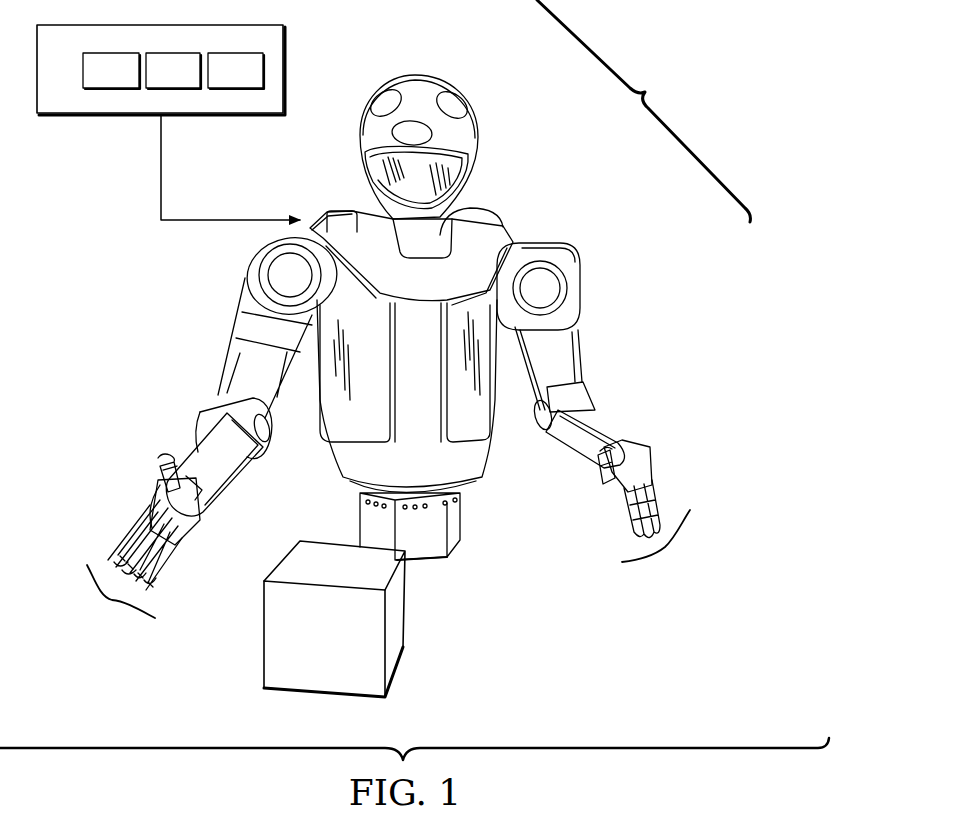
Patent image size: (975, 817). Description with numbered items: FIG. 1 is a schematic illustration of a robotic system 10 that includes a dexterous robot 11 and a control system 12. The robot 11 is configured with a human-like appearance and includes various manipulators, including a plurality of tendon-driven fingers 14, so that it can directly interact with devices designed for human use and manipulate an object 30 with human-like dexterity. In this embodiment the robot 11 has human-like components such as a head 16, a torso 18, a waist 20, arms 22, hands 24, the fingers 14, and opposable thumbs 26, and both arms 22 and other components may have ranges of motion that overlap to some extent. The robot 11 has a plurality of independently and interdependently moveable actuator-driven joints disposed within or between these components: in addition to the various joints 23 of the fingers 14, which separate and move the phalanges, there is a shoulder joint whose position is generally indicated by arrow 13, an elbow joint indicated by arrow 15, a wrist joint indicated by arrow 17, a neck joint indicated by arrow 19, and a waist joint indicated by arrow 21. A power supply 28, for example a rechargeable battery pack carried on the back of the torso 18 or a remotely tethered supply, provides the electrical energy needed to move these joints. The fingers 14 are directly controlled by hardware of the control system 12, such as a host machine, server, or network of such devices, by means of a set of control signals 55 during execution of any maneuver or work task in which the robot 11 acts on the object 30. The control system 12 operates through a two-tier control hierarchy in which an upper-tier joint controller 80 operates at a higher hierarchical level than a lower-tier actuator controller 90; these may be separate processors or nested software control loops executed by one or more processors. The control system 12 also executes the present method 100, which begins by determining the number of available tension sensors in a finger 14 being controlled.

The robotic system 10 is at (643, 111).
The dexterous robot 11 is at (500, 104).
The control system 12 is at (161, 70).
The shoulder joint 13 is at (266, 251).
The tendon-driven fingers 14 is at (110, 602).
The elbow joint 15 is at (192, 409).
The head 16 is at (425, 75).
The wrist joint 17 is at (162, 445).
The torso 18 is at (397, 316).
The neck joint 19 is at (482, 200).
The waist 20 is at (422, 536).
The waist joint 21 is at (426, 572).
The arms 22 is at (236, 343).
The joints of the fingers 23 is at (672, 460).
The hands 24 is at (176, 517).
The opposable thumbs 26 is at (160, 468).
The power supply 28 is at (338, 212).
The object 30 is at (334, 619).
The control signals 55 is at (262, 220).
The joint controller 80 is at (111, 71).
The actuator controller 90 is at (173, 71).
The method 100 is at (236, 71).